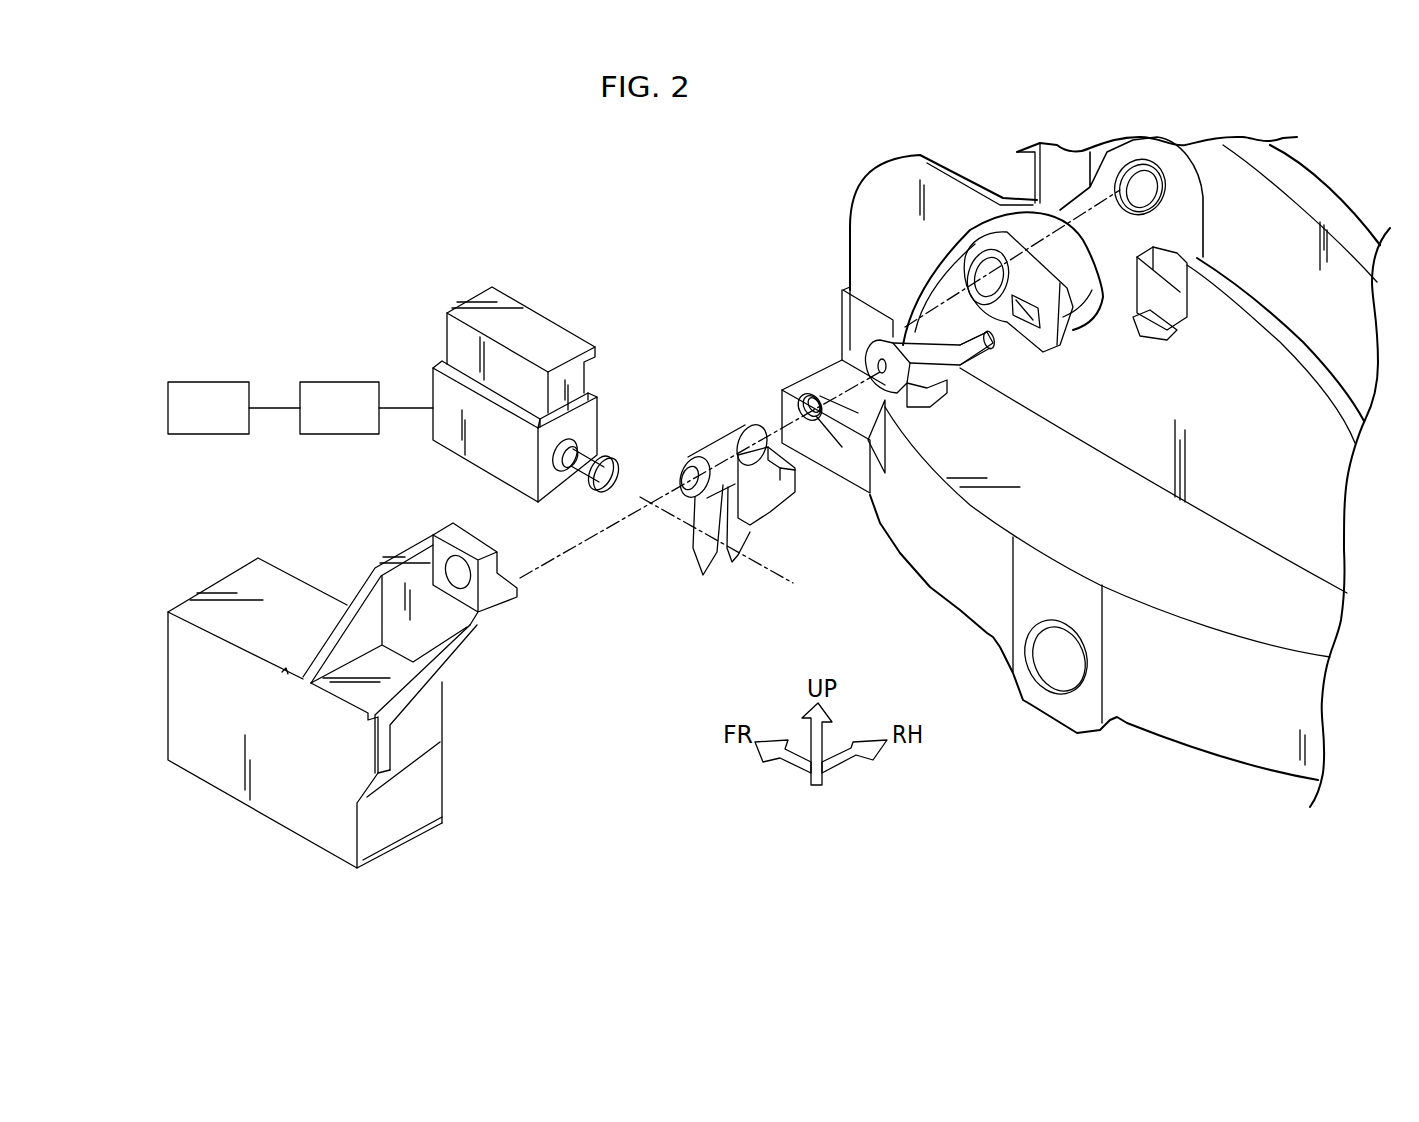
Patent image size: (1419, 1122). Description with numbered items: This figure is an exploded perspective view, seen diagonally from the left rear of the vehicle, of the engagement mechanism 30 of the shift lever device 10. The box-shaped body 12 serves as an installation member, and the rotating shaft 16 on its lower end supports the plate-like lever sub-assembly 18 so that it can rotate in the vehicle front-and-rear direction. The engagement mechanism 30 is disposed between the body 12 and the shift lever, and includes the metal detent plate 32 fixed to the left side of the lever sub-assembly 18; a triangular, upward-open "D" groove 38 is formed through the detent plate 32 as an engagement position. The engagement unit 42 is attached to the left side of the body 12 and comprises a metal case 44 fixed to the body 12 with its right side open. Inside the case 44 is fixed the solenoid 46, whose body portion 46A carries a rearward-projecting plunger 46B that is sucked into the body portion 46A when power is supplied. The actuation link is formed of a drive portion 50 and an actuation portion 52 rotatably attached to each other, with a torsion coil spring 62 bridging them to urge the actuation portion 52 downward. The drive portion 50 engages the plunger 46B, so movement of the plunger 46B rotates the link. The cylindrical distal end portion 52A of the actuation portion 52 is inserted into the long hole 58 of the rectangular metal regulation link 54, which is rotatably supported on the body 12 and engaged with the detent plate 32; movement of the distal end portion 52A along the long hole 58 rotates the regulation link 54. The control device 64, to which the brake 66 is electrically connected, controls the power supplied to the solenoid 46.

The shift lever device 10 is at (471, 210).
The body 12 is at (872, 193).
The rotating shaft 16 is at (1063, 663).
The lever sub-assembly 18 is at (1200, 225).
The engagement mechanism 30 is at (731, 262).
The detent plate 32 is at (1133, 303).
The "D" groove 38 is at (1188, 273).
The engagement unit 42 is at (660, 331).
The case 44 is at (213, 587).
The solenoid 46 is at (437, 368).
The body portion 46A is at (598, 400).
The plunger 46B is at (612, 468).
The drive portion 50 is at (722, 430).
The actuation portion 52 is at (970, 375).
The distal end portion 52A is at (983, 352).
The regulation link 54 is at (993, 222).
The long hole 58 is at (1043, 352).
The torsion coil spring 62 is at (813, 390).
The control device 64 is at (338, 382).
The brake 66 is at (208, 382).